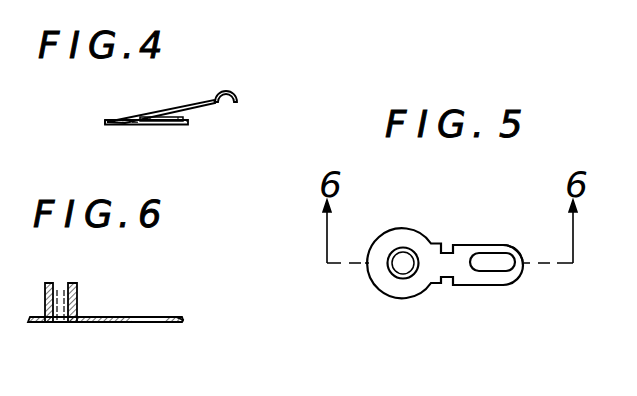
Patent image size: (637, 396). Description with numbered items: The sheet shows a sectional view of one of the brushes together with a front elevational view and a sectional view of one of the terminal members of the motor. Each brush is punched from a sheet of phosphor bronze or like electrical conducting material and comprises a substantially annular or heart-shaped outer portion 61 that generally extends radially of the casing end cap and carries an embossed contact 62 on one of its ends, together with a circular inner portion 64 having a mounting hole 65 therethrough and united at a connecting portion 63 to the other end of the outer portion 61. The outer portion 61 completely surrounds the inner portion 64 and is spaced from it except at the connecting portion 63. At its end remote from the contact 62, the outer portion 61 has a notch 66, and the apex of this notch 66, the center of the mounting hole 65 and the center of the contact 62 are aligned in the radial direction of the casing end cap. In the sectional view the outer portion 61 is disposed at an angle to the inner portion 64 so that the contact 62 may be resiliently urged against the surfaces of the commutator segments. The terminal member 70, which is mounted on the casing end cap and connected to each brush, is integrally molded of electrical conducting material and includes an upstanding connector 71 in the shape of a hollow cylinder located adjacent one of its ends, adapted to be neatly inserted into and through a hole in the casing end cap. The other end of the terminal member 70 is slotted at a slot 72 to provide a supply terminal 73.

In FIG. 4, the outer portion 61 is at (183, 110).
In FIG. 4, the embossed contact 62 is at (220, 92).
In FIG. 4, the connecting portion 63 is at (128, 128).
In FIG. 4, the inner portion 64 is at (188, 125).
In FIG. 4, the mounting hole 65 is at (165, 128).
In FIG. 4, the notch 66 is at (108, 126).
In FIG. 5, the terminal member 70 is at (390, 286).
In FIG. 6, the terminal member 70 is at (94, 323).
In FIG. 5, the upstanding connector 71 is at (405, 250).
In FIG. 6, the upstanding connector 71 is at (77, 290).
In FIG. 5, the slot 72 is at (491, 270).
In FIG. 6, the slot 72 is at (143, 318).
In FIG. 5, the supply terminal 73 is at (512, 245).
In FIG. 6, the supply terminal 73 is at (180, 322).